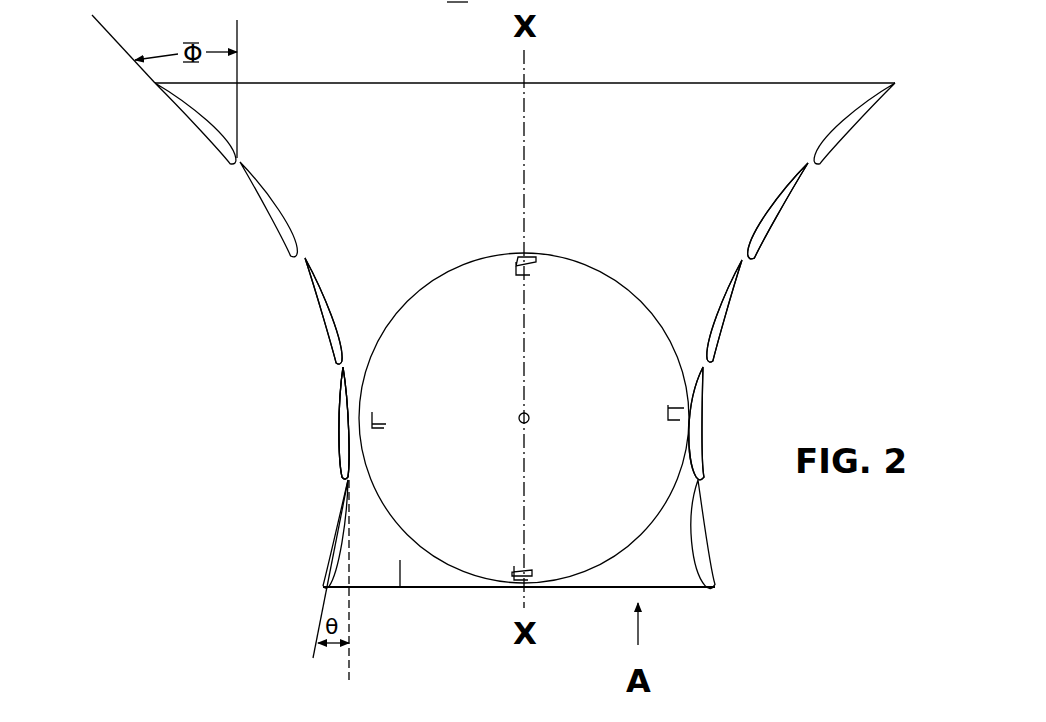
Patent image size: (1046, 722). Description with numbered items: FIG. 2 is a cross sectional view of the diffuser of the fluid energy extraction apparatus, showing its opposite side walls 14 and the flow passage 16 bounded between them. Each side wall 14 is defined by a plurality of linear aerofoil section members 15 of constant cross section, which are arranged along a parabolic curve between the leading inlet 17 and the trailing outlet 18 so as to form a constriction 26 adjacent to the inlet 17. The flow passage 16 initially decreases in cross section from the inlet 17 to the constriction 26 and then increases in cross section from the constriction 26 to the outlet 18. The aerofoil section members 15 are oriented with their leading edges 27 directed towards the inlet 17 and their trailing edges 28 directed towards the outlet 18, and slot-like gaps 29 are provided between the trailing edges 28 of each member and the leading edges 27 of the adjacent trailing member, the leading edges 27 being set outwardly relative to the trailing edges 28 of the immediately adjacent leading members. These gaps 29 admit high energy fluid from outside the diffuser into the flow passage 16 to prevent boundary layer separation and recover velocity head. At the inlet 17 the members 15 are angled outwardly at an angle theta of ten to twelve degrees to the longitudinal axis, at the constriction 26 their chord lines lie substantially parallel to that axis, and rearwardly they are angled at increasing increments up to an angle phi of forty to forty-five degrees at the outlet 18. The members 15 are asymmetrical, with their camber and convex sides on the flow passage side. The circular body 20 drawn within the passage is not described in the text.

The side walls 14 is at (803, 191).
The aerofoil section members 15 is at (730, 298).
The flow passage 16 is at (398, 552).
The inlet 17 is at (685, 622).
The outlet 18 is at (686, 76).
The circular body / rotor 20 is at (475, 532).
The constriction 26 is at (723, 403).
The leading edges 27 is at (338, 360).
The trailing edges 28 is at (345, 365).
The gaps 29 is at (347, 480).